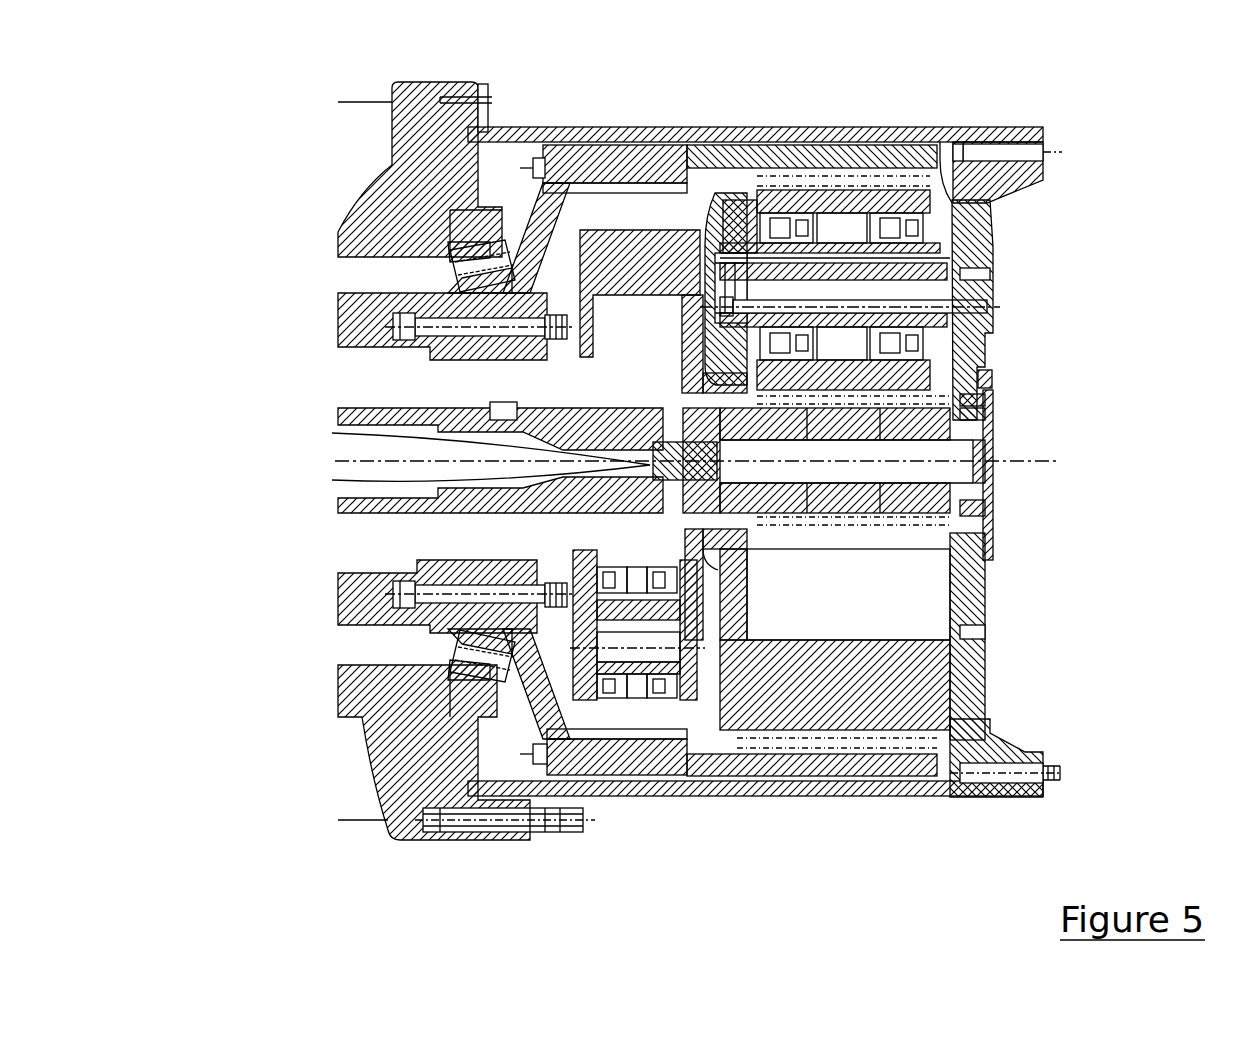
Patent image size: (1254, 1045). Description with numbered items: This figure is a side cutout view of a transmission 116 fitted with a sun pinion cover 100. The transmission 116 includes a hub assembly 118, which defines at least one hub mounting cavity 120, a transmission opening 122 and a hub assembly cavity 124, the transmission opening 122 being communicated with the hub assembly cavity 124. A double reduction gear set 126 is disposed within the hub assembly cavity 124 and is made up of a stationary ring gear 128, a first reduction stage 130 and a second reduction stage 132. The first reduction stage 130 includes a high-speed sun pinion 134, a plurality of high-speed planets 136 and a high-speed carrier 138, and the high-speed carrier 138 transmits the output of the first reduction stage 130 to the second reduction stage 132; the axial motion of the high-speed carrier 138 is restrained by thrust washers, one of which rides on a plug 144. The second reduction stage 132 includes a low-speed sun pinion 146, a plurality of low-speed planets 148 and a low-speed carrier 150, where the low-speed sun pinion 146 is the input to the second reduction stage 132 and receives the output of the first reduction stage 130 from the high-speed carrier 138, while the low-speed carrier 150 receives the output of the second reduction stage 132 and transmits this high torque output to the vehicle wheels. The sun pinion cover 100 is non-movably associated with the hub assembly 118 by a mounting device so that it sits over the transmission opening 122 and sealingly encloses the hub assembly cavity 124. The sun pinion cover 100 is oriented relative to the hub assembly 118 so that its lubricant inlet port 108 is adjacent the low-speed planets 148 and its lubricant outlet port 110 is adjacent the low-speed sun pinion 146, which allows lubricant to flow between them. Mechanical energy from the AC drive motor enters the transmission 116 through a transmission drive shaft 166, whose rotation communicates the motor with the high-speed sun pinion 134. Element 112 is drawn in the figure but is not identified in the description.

The sun pinion cover 100 is at (993, 495).
The lubricant inlet port 108 is at (993, 398).
The lubricant outlet port 110 is at (993, 460).
The bearing 112 is at (993, 420).
The transmission 116 is at (1142, 145).
The hub assembly 118 is at (398, 192).
The hub mounting cavity 120 is at (995, 378).
The transmission opening 122 is at (993, 487).
The hub assembly cavity 124 is at (497, 163).
The double reduction gear set 126 is at (643, 450).
The stationary ring gear 128 is at (572, 166).
The first reduction stage 130 is at (393, 405).
The second reduction stage 132 is at (985, 630).
The high-speed sun pinion 134 is at (393, 518).
The high-speed planets 136 is at (663, 833).
The high-speed carrier 138 is at (603, 233).
The plug 144 is at (332, 463).
The low-speed sun pinion 146 is at (995, 530).
The low-speed planets 148 is at (1000, 292).
The low-speed carrier 150 is at (858, 795).
The transmission drive shaft 166 is at (337, 455).